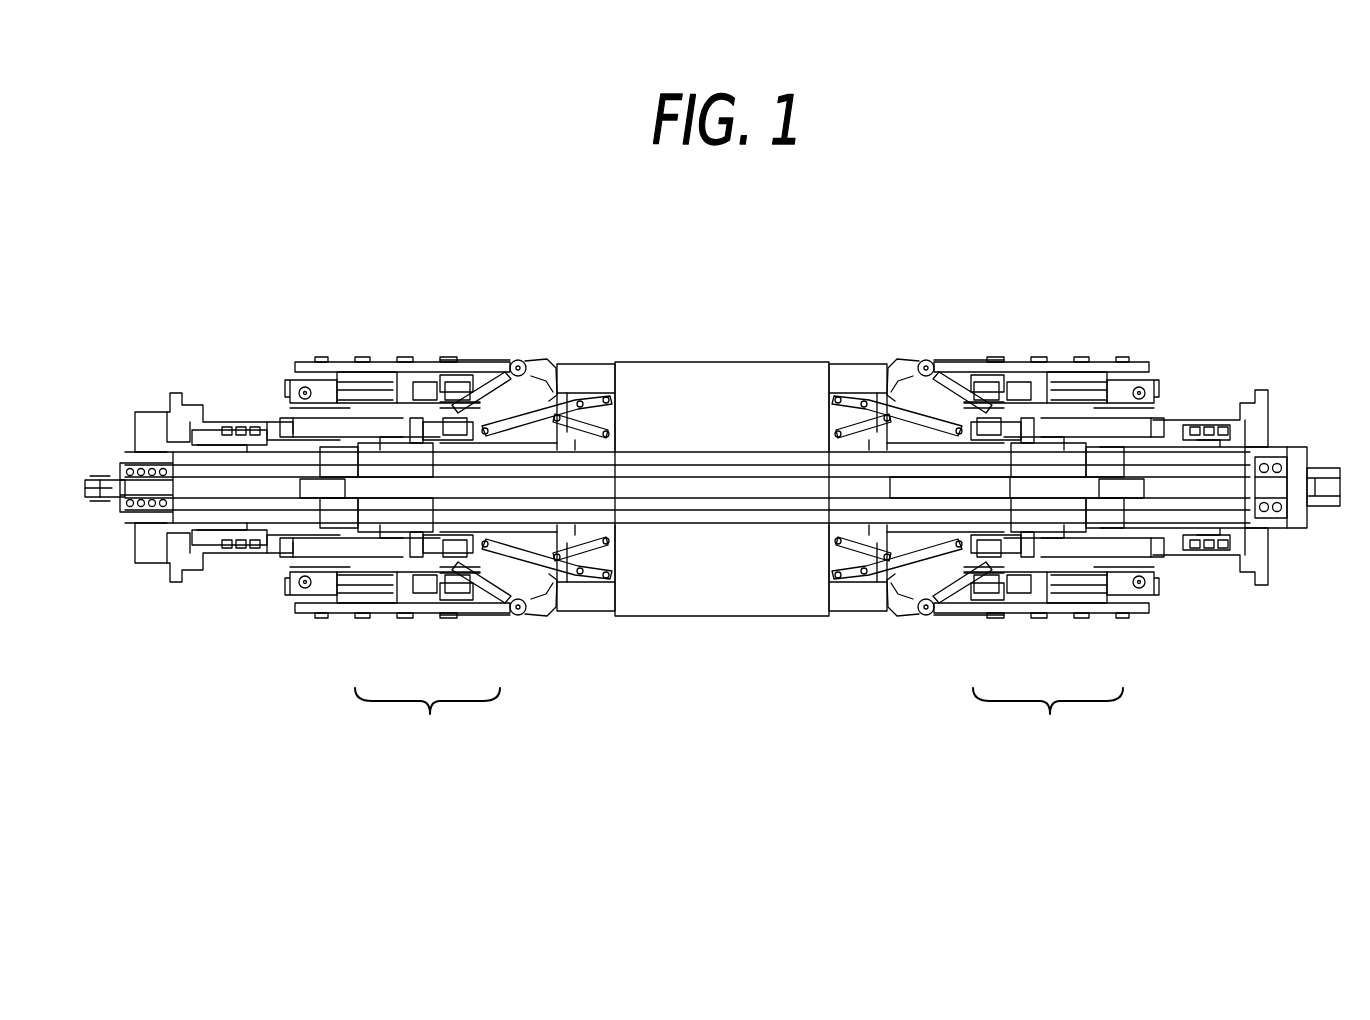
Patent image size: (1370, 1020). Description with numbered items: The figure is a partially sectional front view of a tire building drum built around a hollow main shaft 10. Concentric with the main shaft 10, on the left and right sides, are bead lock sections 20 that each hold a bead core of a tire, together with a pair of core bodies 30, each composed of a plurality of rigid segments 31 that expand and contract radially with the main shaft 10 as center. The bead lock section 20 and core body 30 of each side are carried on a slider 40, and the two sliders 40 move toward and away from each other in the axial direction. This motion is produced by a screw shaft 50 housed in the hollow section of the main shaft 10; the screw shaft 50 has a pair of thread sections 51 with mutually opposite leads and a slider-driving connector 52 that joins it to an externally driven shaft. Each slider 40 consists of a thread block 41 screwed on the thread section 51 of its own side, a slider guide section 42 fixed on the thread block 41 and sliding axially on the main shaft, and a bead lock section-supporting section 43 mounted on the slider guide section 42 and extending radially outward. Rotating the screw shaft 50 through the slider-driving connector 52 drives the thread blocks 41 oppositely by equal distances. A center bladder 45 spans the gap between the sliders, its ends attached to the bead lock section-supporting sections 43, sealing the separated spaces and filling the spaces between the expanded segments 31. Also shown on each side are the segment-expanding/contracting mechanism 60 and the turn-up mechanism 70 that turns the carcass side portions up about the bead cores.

The main shaft 10 is at (565, 458).
The bead lock section 20 is at (480, 360).
The core body 30 is at (577, 346).
The rigid segment 31 is at (607, 358).
The slider 40 is at (739, 723).
The thread block 41 is at (395, 463).
The slider guide section 42 is at (520, 452).
The bead lock section-supporting section 43 is at (347, 443).
The center bladder 45 is at (732, 357).
The screw shaft 50 is at (700, 490).
The thread section 51 is at (313, 492).
The slider-driving connector 52 is at (96, 470).
The segment-expanding/contracting mechanism 60 is at (242, 395).
The turn-up mechanism 70 is at (318, 350).